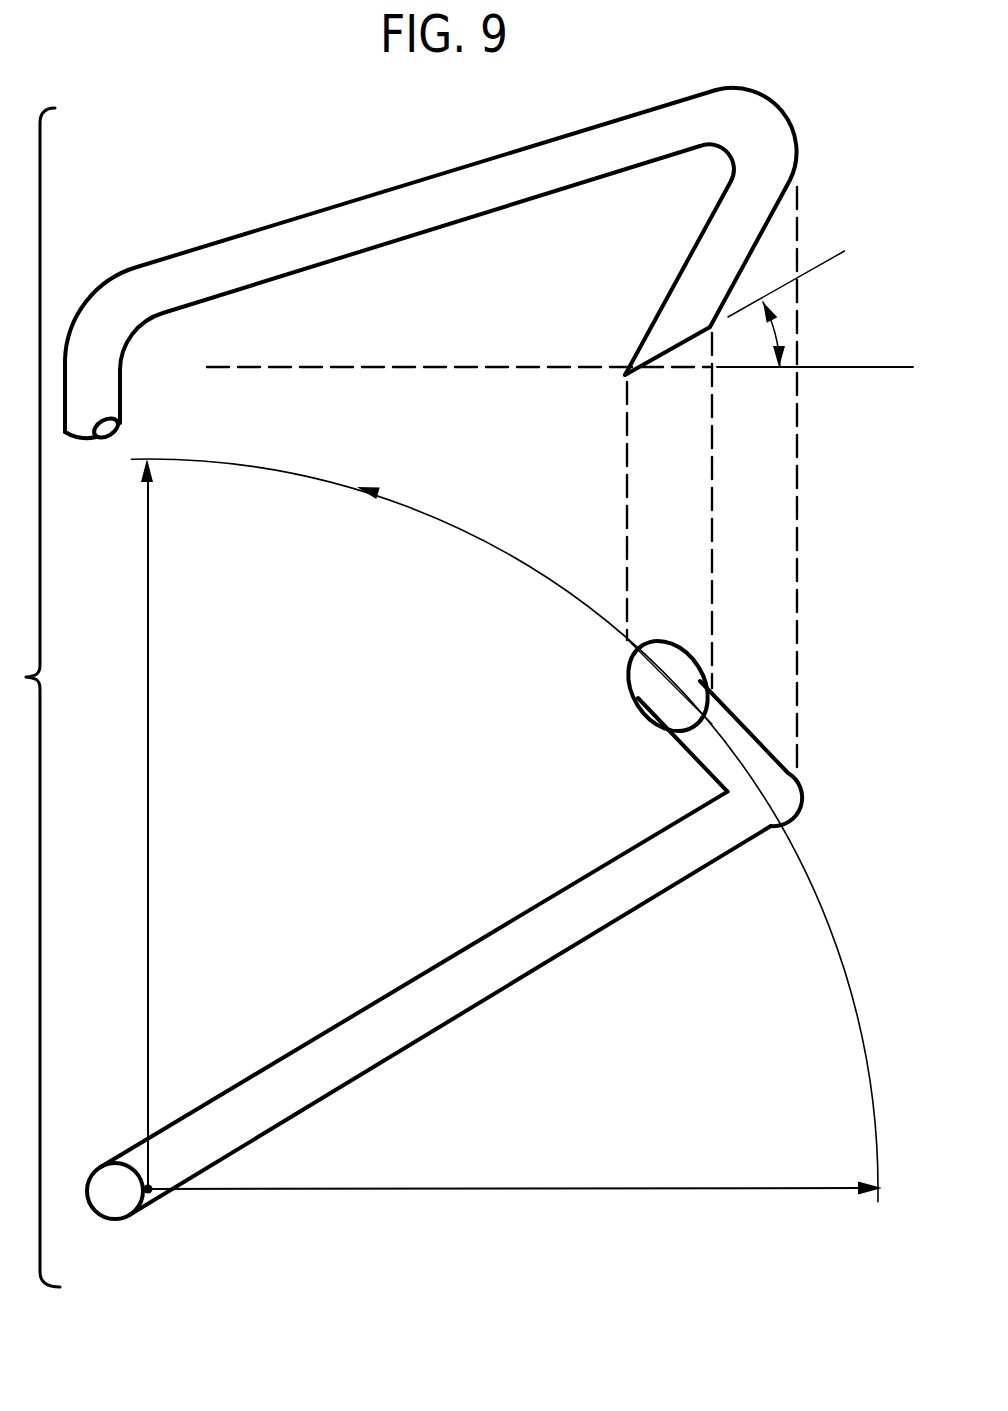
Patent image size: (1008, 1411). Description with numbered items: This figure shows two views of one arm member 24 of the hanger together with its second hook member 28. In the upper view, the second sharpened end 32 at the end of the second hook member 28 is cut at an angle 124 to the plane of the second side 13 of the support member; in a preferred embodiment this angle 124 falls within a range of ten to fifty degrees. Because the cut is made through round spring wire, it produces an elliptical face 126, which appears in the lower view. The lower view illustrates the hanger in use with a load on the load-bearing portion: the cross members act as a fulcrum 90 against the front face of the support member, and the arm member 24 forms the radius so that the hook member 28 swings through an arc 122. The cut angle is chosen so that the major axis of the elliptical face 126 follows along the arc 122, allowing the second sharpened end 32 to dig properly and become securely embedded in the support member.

The arm member 24 is at (395, 208).
The second hook member 28 is at (697, 280).
The second sharpened end 32 is at (622, 382).
The second side of the support member 13 is at (863, 368).
The angle 124 is at (782, 330).
The arc 122 is at (450, 522).
The elliptical face 126 is at (678, 672).
The fulcrum 90 is at (112, 1197).